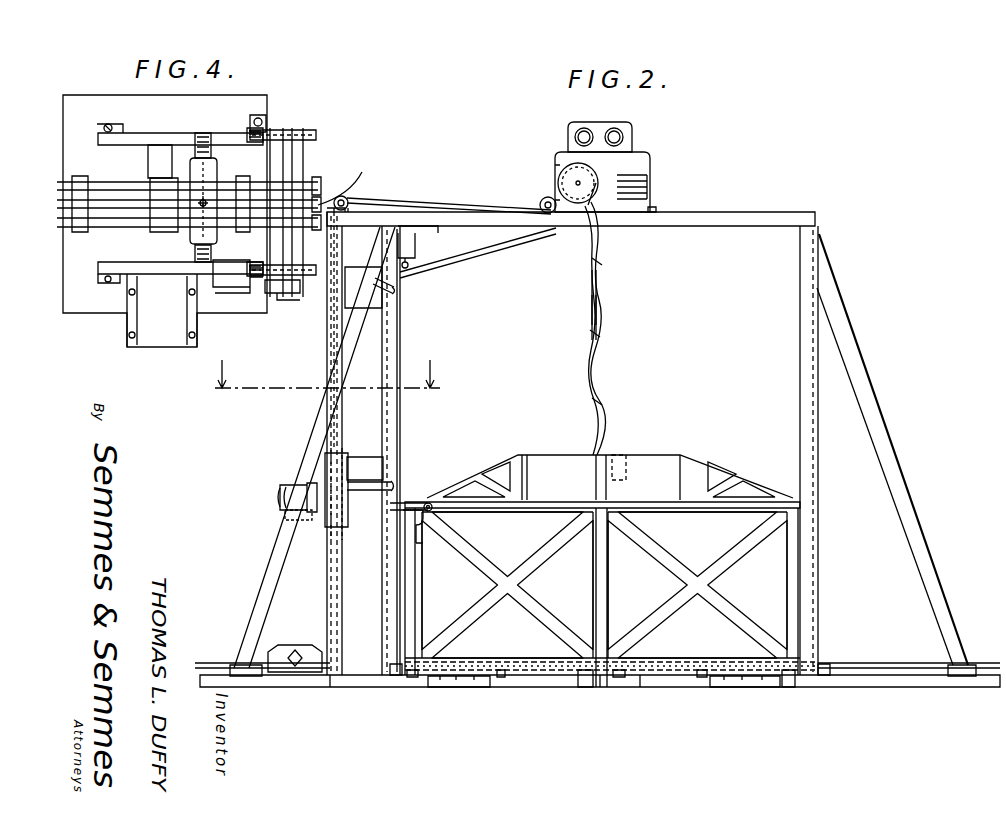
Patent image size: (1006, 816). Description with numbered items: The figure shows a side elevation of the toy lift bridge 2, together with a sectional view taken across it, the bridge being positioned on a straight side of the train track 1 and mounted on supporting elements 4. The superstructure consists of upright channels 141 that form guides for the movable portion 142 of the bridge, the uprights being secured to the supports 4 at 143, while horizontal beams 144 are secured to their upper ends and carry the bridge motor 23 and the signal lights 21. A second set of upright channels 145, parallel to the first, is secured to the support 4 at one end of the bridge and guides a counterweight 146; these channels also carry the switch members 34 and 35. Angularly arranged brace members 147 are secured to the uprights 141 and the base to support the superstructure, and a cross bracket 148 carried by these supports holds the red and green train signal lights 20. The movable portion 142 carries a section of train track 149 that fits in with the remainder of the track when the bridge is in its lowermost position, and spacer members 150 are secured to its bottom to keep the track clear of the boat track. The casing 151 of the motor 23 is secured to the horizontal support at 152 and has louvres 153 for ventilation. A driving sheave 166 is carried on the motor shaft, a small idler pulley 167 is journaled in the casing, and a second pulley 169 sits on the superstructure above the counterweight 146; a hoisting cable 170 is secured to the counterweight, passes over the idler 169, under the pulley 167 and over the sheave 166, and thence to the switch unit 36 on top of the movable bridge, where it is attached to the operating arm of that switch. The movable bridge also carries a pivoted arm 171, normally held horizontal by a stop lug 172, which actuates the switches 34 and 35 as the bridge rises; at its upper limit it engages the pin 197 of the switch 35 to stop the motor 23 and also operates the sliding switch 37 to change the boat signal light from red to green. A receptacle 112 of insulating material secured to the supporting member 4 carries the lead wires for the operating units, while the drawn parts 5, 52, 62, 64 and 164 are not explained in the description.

In FIG. 4, the train track 1 is at (96, 192).
In FIG. 2, the train track 1 is at (206, 645).
In FIG. 2, the lift bridge 2 is at (832, 232).
In FIG. 4, the supporting elements 4 is at (78, 107).
In FIG. 2, the supporting elements 4 is at (925, 702).
In FIG. 2, the rail 5 is at (460, 690).
In FIG. 4, the train signal lights 20 is at (150, 228).
In FIG. 2, the train signal lights 20 is at (290, 486).
In FIG. 2, the boat signal lights 21 is at (634, 134).
In FIG. 2, the bridge motor 23 is at (658, 172).
In FIG. 4, the switch 34 is at (220, 282).
In FIG. 2, the switch 34 is at (360, 457).
In FIG. 2, the switch 35 is at (352, 267).
In FIG. 2, the switch unit 36 is at (630, 462).
In FIG. 2, the sliding switch 37 is at (436, 247).
In FIG. 2, the cable 52 is at (592, 318).
In FIG. 2, the cable 62 is at (566, 310).
In FIG. 2, the cable 64 is at (564, 324).
In FIG. 4, the receptacle 112 is at (148, 292).
In FIG. 2, the receptacle 112 is at (290, 645).
In FIG. 4, the upright channels 141 is at (250, 135).
In FIG. 2, the upright channels 141 is at (401, 414).
In FIG. 4, the movable portion of the bridge 142 is at (312, 135).
In FIG. 2, the movable portion of the bridge 142 is at (722, 594).
In FIG. 4, the securing point 143 is at (250, 118).
In FIG. 2, the securing point 143 is at (398, 678).
In FIG. 2, the horizontal beams 144 is at (725, 214).
In FIG. 4, the upright channels 145 is at (211, 145).
In FIG. 2, the upright channels 145 is at (327, 353).
In FIG. 4, the counterweight 146 is at (211, 172).
In FIG. 2, the counterweight 146 is at (330, 537).
In FIG. 4, the brace members 147 is at (150, 140).
In FIG. 2, the brace members 147 is at (885, 447).
In FIG. 4, the cross bracket 148 is at (150, 160).
In FIG. 2, the cross bracket 148 is at (285, 516).
In FIG. 4, the section of train track 149 is at (345, 182).
In FIG. 2, the section of train track 149 is at (492, 660).
In FIG. 4, the spacer members 150 is at (300, 149).
In FIG. 2, the spacer members 150 is at (512, 688).
In FIG. 2, the casing 151 is at (556, 161).
In FIG. 2, the securing point 152 is at (658, 208).
In FIG. 2, the louvres 153 is at (648, 181).
In FIG. 2, the drum 164 is at (578, 181).
In FIG. 2, the driving sheave 166 is at (598, 174).
In FIG. 2, the idler pulley 167 is at (541, 200).
In FIG. 2, the pulley 169 is at (350, 202).
In FIG. 4, the hoisting cable 170 is at (203, 195).
In FIG. 2, the hoisting cable 170 is at (440, 205).
In FIG. 2, the pivoted arm 171 is at (427, 504).
In FIG. 2, the stop lug 172 is at (420, 523).
In FIG. 2, the pin 197 is at (312, 434).